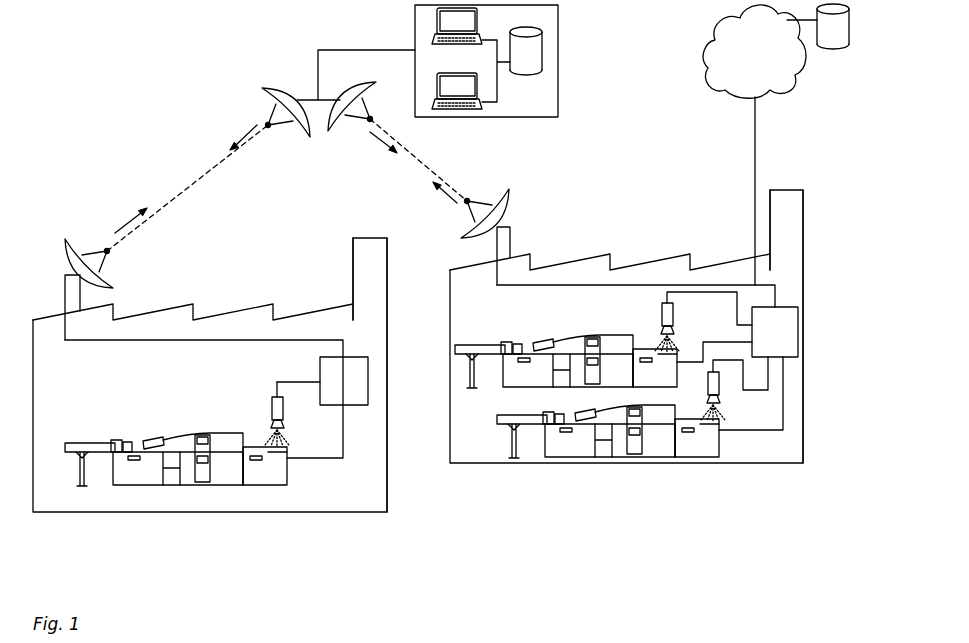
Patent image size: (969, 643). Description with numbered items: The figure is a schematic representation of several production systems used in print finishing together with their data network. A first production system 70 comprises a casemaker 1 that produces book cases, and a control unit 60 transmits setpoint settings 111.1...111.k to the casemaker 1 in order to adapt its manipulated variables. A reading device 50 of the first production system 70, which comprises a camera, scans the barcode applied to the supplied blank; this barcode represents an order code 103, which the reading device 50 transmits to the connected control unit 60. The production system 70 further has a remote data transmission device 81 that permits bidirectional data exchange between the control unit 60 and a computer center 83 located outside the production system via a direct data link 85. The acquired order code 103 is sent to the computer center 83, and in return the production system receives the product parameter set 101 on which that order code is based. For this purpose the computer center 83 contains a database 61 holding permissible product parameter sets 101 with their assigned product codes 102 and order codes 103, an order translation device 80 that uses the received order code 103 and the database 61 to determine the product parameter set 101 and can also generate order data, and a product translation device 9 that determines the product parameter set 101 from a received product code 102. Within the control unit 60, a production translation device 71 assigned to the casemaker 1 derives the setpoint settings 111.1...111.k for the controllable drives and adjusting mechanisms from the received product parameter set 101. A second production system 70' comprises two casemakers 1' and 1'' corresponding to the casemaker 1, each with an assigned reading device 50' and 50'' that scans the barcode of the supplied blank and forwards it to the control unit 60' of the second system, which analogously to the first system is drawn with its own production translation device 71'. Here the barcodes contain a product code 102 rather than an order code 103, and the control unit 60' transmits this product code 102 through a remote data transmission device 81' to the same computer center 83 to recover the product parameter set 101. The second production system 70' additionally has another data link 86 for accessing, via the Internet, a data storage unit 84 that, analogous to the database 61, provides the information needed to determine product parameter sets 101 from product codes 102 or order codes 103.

The casemaker 1 is at (154, 497).
The casemaker 1' is at (603, 433).
The casemaker 1'' is at (586, 468).
The product translation device 9 is at (437, 33).
The reading device 50 is at (307, 486).
The reading device 50' is at (702, 242).
The reading device 50'' is at (714, 444).
The control unit 60 is at (371, 474).
The control unit 60' is at (803, 332).
The database 61 is at (530, 62).
The first production system 70 is at (210, 414).
The second production system 70' is at (626, 375).
The production translation device 71 is at (387, 386).
The transmission tower 71' is at (795, 297).
The order translation device 80 is at (472, 109).
The remote data transmission device 81 is at (231, 169).
The remote data transmission device 81' is at (463, 160).
The computer center 83 is at (602, 82).
The data storage unit 84 is at (835, 50).
The direct data link 85 is at (193, 185).
The data link 86 is at (755, 117).
The product parameter set 101 is at (233, 147).
The product code 102 is at (447, 189).
The order code 103 is at (140, 213).
The setpoint settings 111.1...111.k is at (307, 458).